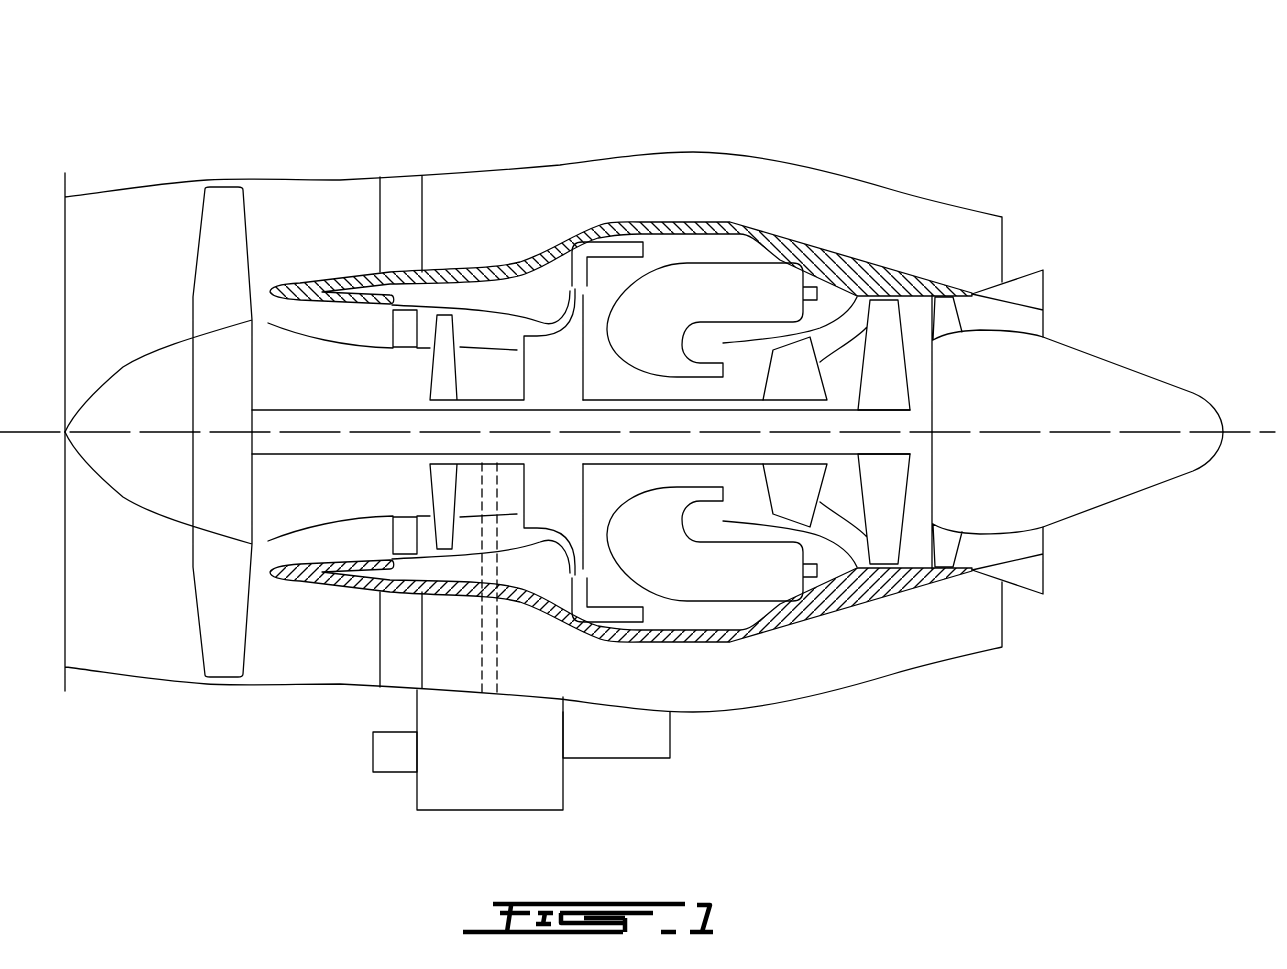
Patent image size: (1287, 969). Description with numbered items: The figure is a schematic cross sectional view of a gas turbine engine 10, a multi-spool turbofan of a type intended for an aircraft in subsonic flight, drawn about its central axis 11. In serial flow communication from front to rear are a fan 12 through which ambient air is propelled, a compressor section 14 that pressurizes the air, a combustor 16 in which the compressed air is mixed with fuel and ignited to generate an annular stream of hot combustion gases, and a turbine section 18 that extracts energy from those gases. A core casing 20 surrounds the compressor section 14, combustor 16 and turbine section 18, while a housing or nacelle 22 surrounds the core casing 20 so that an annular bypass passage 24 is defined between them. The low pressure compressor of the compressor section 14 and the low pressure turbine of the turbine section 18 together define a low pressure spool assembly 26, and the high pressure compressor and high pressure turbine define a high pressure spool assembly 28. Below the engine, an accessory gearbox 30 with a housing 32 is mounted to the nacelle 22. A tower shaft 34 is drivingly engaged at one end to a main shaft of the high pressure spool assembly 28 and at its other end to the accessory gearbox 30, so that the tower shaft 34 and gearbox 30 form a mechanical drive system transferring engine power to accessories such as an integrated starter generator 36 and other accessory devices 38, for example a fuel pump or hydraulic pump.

The engine 10 is at (815, 148).
The engine centerline axis 11 is at (1263, 432).
The fan 12 is at (215, 591).
The compressor section 14 is at (480, 327).
The combustor 16 is at (706, 283).
The turbine section 18 is at (830, 500).
The core casing 20 is at (860, 272).
The nacelle 22 is at (345, 178).
The annular bypass passage 24 is at (720, 178).
The low pressure spool assembly 26 is at (298, 410).
The high pressure spool assembly 28 is at (600, 400).
The accessory gearbox 30 is at (380, 818).
The housing 32 is at (490, 795).
The tower shaft 34 is at (488, 633).
The integrated starter generator 36 is at (635, 745).
The accessory devices 38 is at (373, 752).